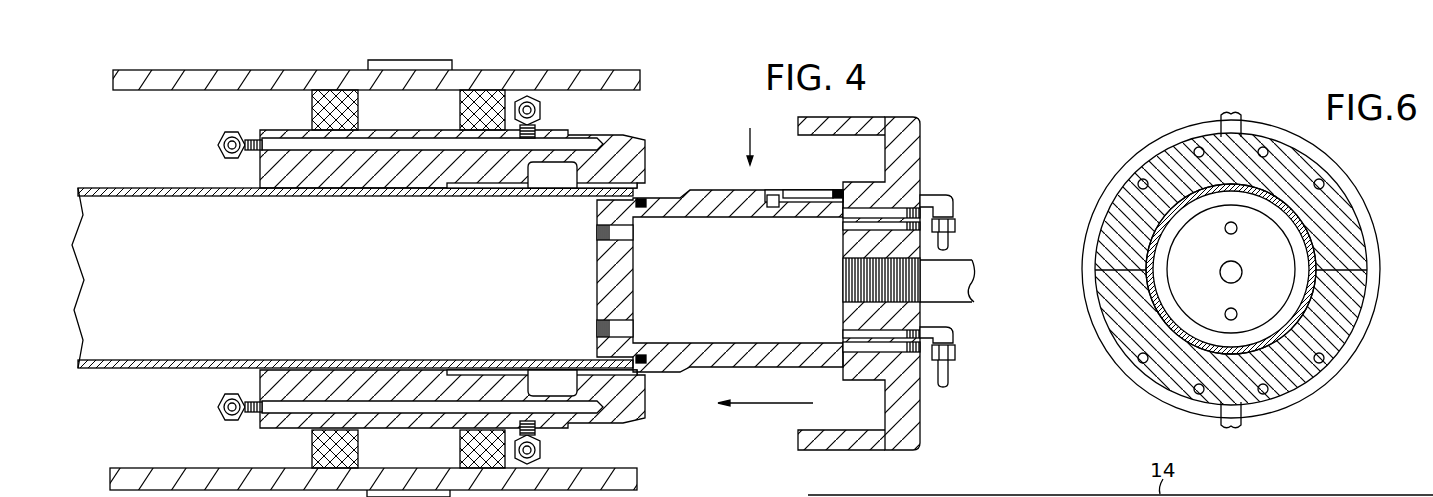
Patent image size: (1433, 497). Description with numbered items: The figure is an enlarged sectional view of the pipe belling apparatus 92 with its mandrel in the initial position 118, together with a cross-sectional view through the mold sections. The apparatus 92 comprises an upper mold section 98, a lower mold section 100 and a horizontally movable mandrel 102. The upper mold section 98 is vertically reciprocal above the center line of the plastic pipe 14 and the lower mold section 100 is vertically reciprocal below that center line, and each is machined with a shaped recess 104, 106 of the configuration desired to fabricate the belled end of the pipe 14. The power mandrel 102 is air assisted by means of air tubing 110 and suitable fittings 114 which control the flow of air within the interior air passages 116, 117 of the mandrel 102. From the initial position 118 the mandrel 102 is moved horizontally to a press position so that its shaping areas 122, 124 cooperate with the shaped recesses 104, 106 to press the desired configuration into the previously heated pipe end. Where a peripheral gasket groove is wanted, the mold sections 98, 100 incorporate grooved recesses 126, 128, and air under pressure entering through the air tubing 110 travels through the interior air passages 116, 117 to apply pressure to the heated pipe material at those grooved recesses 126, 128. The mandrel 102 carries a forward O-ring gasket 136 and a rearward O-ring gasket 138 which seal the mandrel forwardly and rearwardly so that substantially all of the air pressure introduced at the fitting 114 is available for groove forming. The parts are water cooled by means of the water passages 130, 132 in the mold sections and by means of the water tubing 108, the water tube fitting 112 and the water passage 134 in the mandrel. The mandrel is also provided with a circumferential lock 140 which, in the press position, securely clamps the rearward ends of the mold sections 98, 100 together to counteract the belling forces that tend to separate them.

In FIG. 4, the plastic pipe 14 is at (135, 188).
In FIG. 6, the plastic pipe 14 is at (1213, 342).
In FIG. 4, the pipe belling apparatus 92 is at (656, 122).
In FIG. 4, the upper mold section 98 is at (203, 90).
In FIG. 6, the upper mold section 98 is at (1158, 167).
In FIG. 4, the lower mold section 100 is at (188, 468).
In FIG. 6, the lower mold section 100 is at (1340, 333).
In FIG. 4, the mandrel 102 is at (920, 377).
In FIG. 6, the mandrel 102 is at (1281, 260).
In FIG. 4, the shaped recess 104 is at (498, 188).
In FIG. 4, the shaped recess 106 is at (480, 372).
In FIG. 4, the water tubing 108 is at (950, 375).
In FIG. 4, the air tubing 110 is at (950, 240).
In FIG. 4, the water tube fitting 112 is at (950, 337).
In FIG. 4, the fitting 114 is at (947, 200).
In FIG. 4, the interior air passage 116 is at (823, 190).
In FIG. 4, the interior air passage 117 is at (774, 196).
In FIG. 4, the initial position 118 is at (741, 134).
In FIG. 4, the shaping area 122 is at (713, 190).
In FIG. 4, the shaping area 124 is at (710, 372).
In FIG. 4, the grooved recess 126 is at (570, 178).
In FIG. 4, the grooved recess 128 is at (548, 388).
In FIG. 4, the water passage 130 is at (312, 150).
In FIG. 6, the water passage 130 is at (1137, 185).
In FIG. 4, the water passage 132 is at (298, 405).
In FIG. 6, the water passage 132 is at (1143, 362).
In FIG. 4, the water passage 134 is at (890, 342).
In FIG. 4, the forward O-ring gasket 136 is at (643, 198).
In FIG. 4, the rearward O-ring gasket 138 is at (840, 365).
In FIG. 4, the circumferential lock 140 is at (813, 440).
In FIG. 6, the circumferential lock 140 is at (1213, 270).